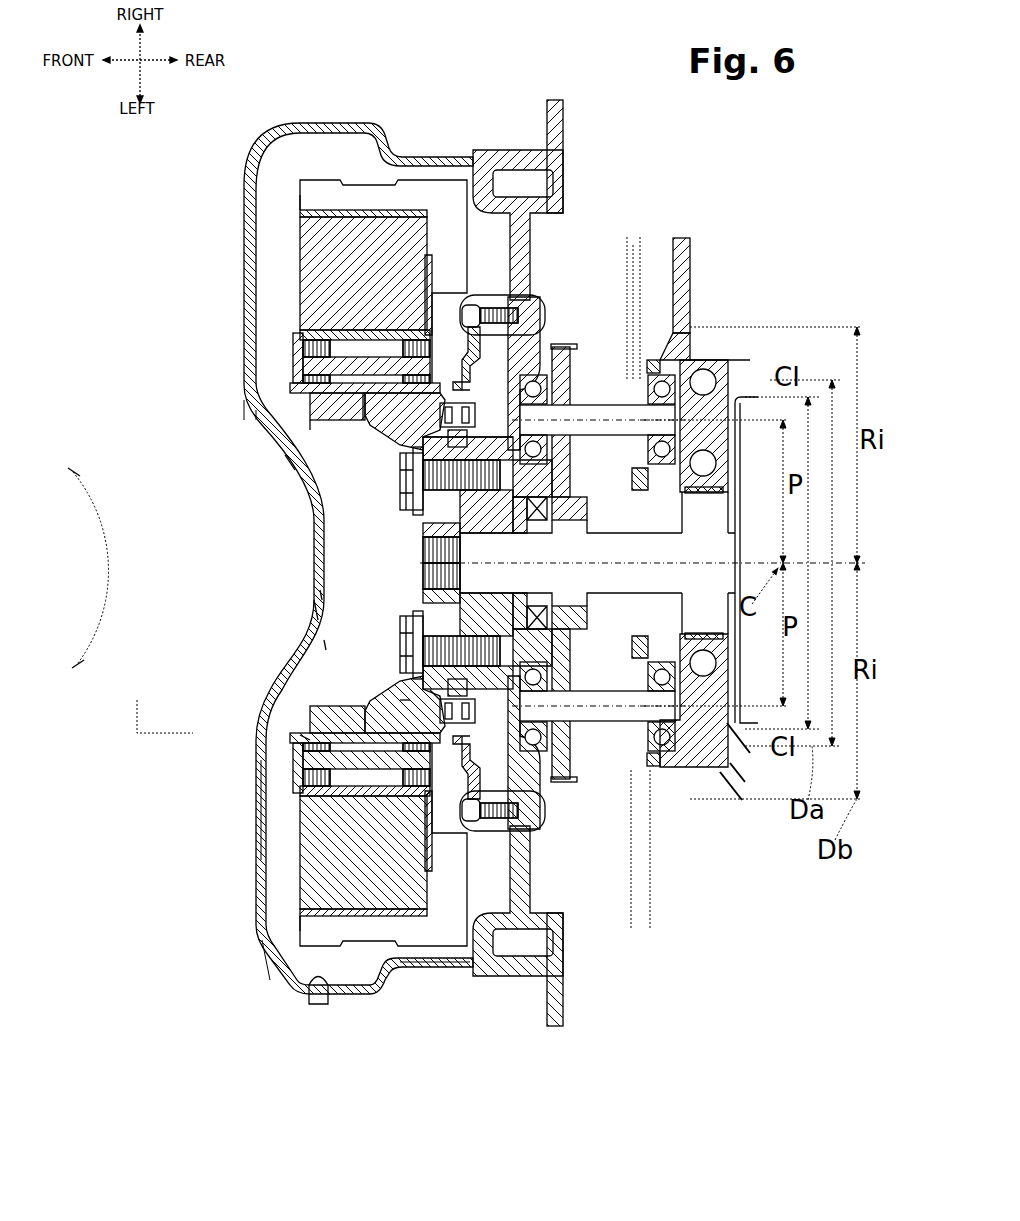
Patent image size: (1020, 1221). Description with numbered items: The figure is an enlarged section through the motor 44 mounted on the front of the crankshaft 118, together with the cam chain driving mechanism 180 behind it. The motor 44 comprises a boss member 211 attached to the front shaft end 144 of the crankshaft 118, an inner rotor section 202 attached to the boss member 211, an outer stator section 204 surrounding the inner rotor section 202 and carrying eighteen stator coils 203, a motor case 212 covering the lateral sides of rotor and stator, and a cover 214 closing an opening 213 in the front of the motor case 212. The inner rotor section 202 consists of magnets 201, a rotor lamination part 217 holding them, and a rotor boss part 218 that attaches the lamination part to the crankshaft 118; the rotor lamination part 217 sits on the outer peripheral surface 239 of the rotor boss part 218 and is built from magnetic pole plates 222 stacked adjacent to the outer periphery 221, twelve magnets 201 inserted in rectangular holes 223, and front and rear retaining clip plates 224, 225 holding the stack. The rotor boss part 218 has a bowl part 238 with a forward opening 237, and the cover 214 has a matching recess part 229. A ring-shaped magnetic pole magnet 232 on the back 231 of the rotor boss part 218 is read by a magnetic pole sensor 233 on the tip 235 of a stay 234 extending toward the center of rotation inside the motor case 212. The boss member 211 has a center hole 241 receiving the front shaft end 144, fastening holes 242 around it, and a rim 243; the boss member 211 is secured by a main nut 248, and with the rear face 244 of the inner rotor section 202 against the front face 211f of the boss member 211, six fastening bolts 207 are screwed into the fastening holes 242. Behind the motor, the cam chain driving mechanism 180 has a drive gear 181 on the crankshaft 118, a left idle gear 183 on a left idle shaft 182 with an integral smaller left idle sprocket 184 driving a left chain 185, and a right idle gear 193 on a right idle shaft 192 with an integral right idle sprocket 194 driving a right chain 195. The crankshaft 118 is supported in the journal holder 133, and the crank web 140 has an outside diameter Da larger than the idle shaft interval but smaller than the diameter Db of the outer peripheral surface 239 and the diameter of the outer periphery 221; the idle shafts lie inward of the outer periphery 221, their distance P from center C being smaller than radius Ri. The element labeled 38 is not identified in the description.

The rear wheel 38 is at (137, 733).
The motor 44 is at (272, 1000).
The crankshaft 118 is at (515, 570).
The journal holder 133 is at (712, 365).
The crank web 140 is at (748, 395).
The front shaft end 144 is at (430, 570).
The cam chain driving mechanism 180 is at (597, 185).
The drive gear 181 is at (690, 515).
The left idle shaft 182 is at (605, 780).
The left idle gear 183 is at (566, 785).
The left idle sprocket 184 is at (646, 770).
The left chain 185 is at (652, 778).
The right idle shaft 192 is at (598, 412).
The right idle gear 193 is at (575, 350).
The right idle sprocket 194 is at (640, 275).
The right chain 195 is at (688, 268).
The magnets 201 is at (252, 350).
The inner rotor section 202 is at (244, 400).
The stator coils 203 is at (320, 230).
The outer stator section 204 is at (300, 250).
The fastening bolts 207 is at (480, 510).
The boss member 211 is at (410, 690).
The front face 211f is at (326, 645).
The motor case 212 is at (420, 968).
The opening 213 is at (318, 1004).
The cover 214 is at (256, 860).
The rotor lamination part 217 is at (290, 378).
The rotor boss part 218 is at (380, 420).
The outer periphery 221 is at (315, 345).
The magnetic pole plates 222 is at (305, 335).
The rectangular holes 223 is at (340, 362).
The front retaining clip plate 224 is at (295, 345).
The rear retaining clip plate 225 is at (436, 290).
The recess part 229 is at (330, 425).
The back 231 is at (300, 740).
The magnetic pole magnet 232 is at (440, 478).
The magnetic pole sensor 233 is at (430, 440).
The stay 234 is at (500, 300).
The tip 235 is at (515, 312).
The opening 237 is at (360, 405).
The bowl part 238 is at (400, 470).
The outer peripheral surface 239 is at (256, 415).
The center hole 241 is at (318, 620).
The fastening holes 242 is at (305, 470).
The rim 243 is at (505, 395).
The rear face 244 is at (430, 690).
The main nut 248 is at (320, 595).